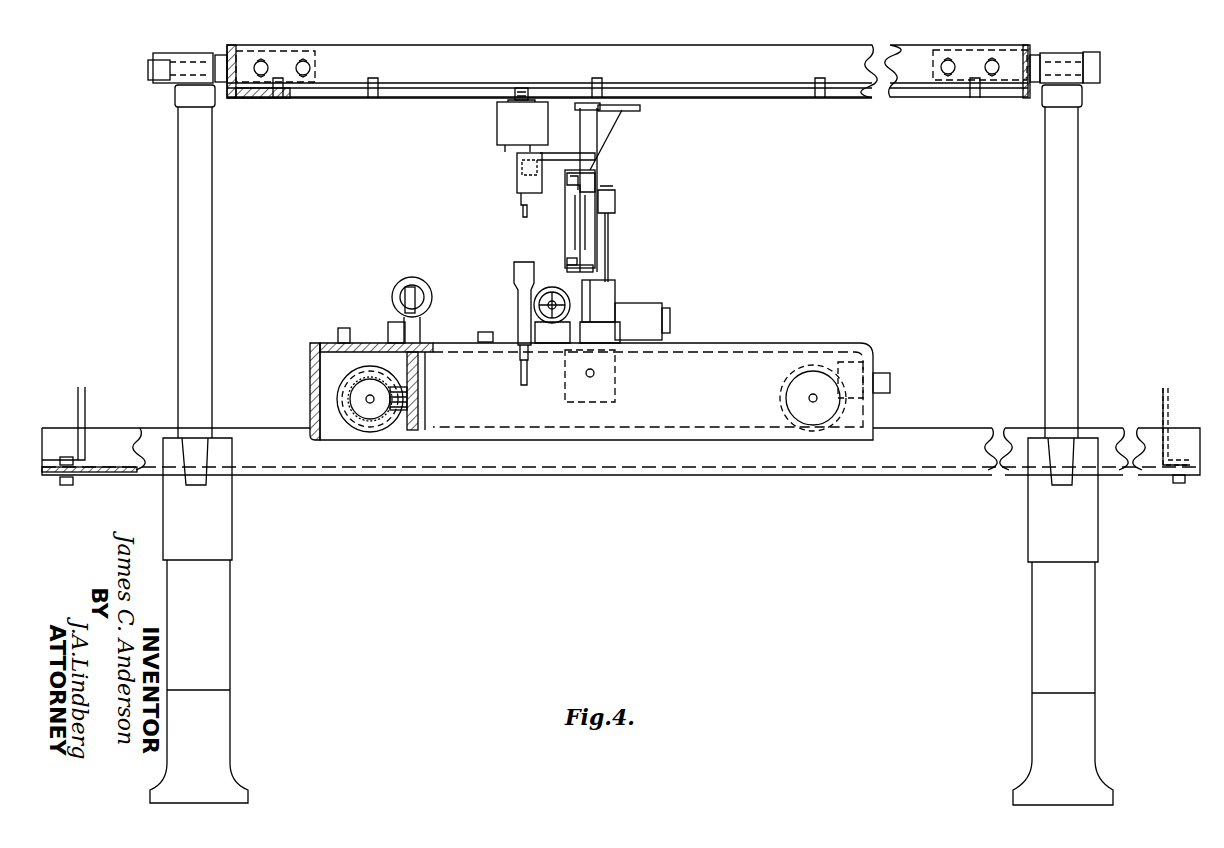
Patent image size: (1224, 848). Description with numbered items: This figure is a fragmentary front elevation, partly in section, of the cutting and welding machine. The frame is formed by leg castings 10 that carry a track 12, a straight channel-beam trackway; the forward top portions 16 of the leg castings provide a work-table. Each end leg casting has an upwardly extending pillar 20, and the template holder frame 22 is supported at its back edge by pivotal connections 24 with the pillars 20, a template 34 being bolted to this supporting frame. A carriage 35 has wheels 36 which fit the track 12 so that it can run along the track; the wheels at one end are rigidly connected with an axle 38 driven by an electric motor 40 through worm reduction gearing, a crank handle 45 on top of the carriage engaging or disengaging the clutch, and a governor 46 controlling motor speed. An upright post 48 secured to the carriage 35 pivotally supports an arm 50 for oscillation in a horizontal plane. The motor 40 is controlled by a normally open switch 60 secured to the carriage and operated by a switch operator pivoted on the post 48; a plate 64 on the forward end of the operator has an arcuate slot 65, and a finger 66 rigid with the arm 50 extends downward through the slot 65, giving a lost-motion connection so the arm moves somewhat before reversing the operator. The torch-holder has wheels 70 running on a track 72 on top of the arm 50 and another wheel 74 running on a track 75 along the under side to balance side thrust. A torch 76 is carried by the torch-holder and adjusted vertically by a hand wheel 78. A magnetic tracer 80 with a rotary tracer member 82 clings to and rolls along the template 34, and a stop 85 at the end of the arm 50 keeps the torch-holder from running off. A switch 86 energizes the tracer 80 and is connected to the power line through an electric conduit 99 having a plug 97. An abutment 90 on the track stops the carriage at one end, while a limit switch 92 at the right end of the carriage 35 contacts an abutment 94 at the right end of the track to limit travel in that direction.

The leg castings 10 is at (218, 606).
The track 12 is at (124, 432).
The forward top portions 16 is at (198, 438).
The pillar 20 is at (205, 186).
The frame 22 is at (241, 62).
The pivotal connections 24 is at (162, 84).
The template 34 is at (262, 98).
The carriage 35 is at (719, 352).
The wheels 36 is at (348, 426).
The axle 38 is at (372, 403).
The electric motor 40 is at (420, 282).
The crank handle 45 is at (340, 328).
The governor 46 is at (422, 298).
The upright post 48 is at (597, 140).
The arm 50 is at (615, 210).
The switch 60 is at (656, 320).
The plate 64 is at (610, 344).
The slot 65 is at (600, 350).
The finger 66 is at (597, 302).
The wheels 70 is at (490, 330).
The track 72 is at (583, 219).
The wheel 74 is at (593, 271).
The track 75 is at (577, 259).
The torch 76 is at (517, 356).
The hand wheel 78 is at (556, 326).
The magnetic tracer 80 is at (497, 125).
The rotary tracer member 82 is at (518, 88).
The stop 85 is at (597, 188).
The switch 86 is at (519, 176).
The abutment 90 is at (86, 398).
The limit switch 92 is at (881, 378).
The abutment 94 is at (1168, 422).
The plug 97 is at (480, 334).
The electric conduit 99 is at (610, 110).